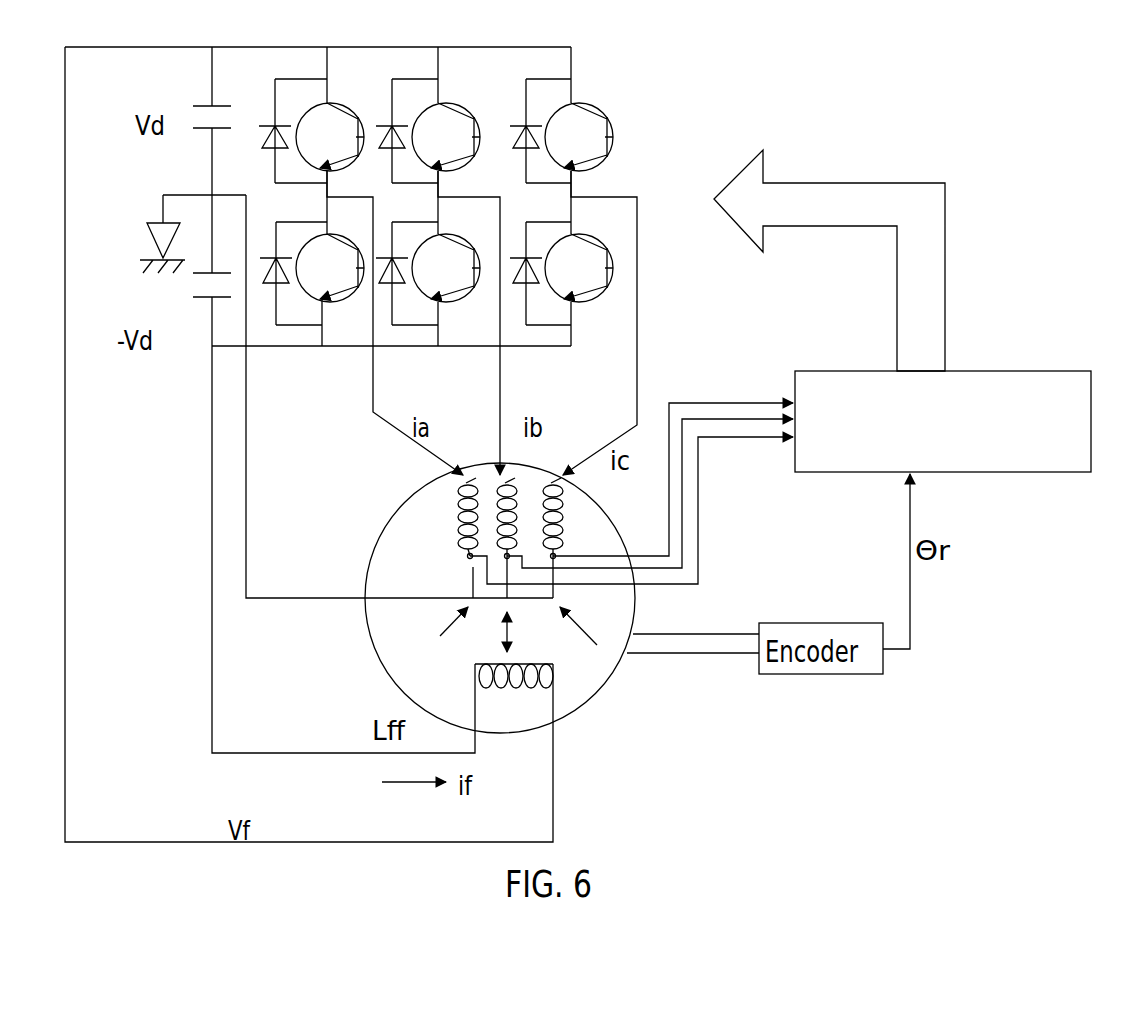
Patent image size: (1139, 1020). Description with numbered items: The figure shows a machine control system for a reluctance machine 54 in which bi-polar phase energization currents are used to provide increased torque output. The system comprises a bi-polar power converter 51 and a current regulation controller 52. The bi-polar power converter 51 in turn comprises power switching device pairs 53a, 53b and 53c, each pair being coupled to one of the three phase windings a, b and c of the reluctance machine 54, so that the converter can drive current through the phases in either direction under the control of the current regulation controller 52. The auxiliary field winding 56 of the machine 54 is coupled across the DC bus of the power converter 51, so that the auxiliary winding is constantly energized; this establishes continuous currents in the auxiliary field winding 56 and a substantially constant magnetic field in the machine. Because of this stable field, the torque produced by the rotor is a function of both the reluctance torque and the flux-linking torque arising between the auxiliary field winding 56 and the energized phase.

The bi-polar power converter 51 is at (318, 32).
The current regulation controller 52 is at (1047, 357).
The power switching device pair 53a is at (365, 116).
The power switching device pair 53b is at (498, 82).
The power switching device pair 53c is at (633, 82).
The reluctance machine 54 is at (388, 513).
The auxiliary field winding 56 is at (480, 680).